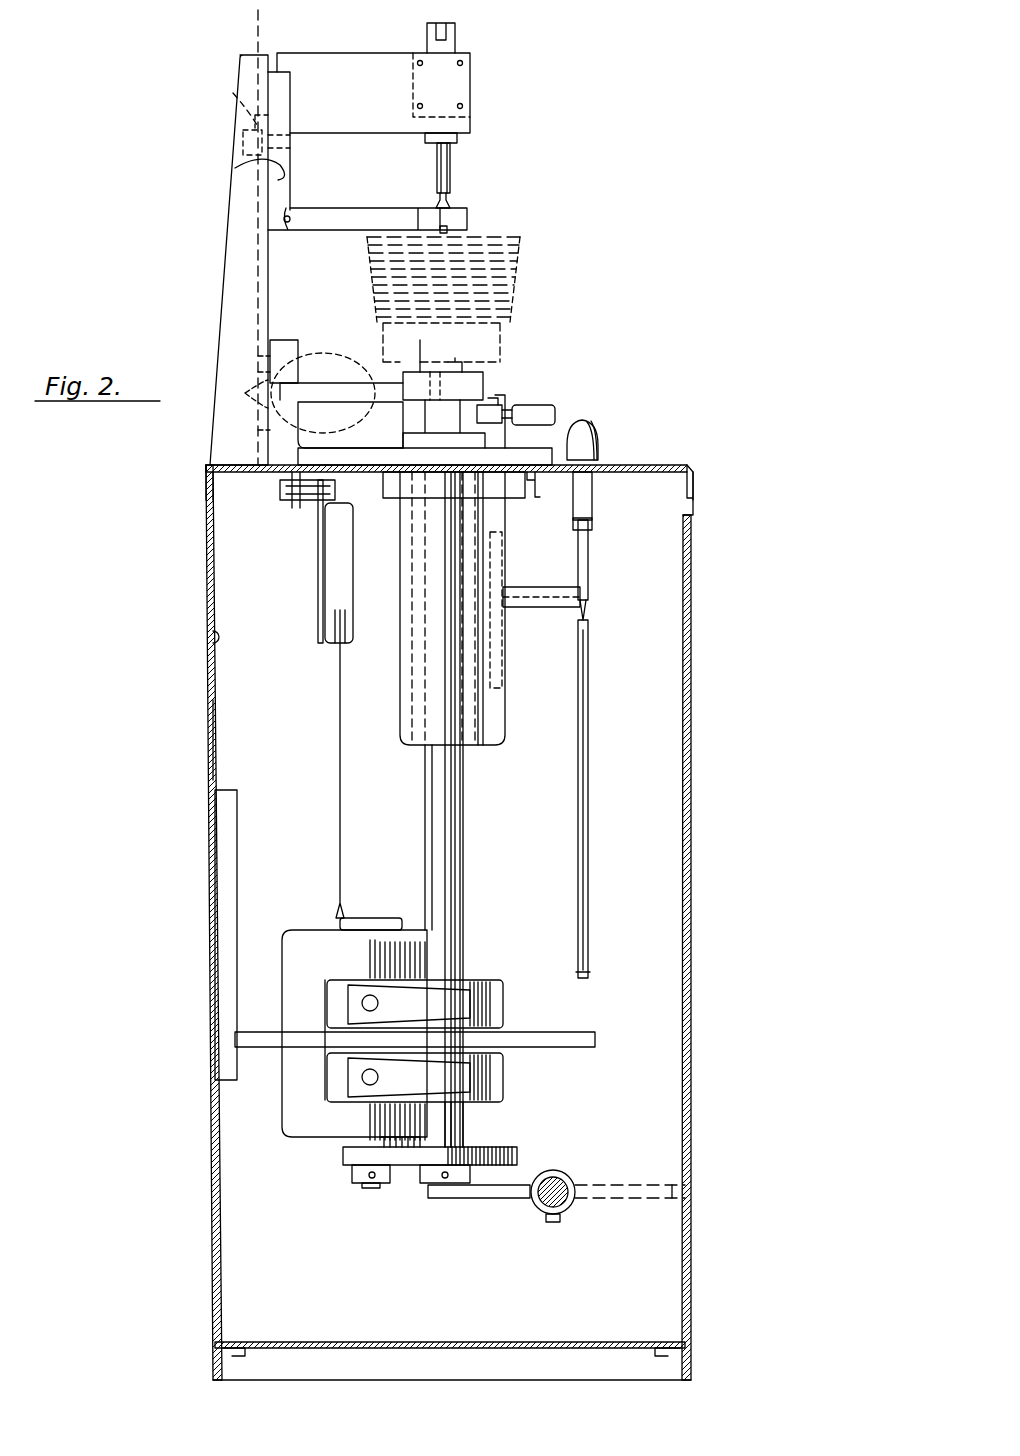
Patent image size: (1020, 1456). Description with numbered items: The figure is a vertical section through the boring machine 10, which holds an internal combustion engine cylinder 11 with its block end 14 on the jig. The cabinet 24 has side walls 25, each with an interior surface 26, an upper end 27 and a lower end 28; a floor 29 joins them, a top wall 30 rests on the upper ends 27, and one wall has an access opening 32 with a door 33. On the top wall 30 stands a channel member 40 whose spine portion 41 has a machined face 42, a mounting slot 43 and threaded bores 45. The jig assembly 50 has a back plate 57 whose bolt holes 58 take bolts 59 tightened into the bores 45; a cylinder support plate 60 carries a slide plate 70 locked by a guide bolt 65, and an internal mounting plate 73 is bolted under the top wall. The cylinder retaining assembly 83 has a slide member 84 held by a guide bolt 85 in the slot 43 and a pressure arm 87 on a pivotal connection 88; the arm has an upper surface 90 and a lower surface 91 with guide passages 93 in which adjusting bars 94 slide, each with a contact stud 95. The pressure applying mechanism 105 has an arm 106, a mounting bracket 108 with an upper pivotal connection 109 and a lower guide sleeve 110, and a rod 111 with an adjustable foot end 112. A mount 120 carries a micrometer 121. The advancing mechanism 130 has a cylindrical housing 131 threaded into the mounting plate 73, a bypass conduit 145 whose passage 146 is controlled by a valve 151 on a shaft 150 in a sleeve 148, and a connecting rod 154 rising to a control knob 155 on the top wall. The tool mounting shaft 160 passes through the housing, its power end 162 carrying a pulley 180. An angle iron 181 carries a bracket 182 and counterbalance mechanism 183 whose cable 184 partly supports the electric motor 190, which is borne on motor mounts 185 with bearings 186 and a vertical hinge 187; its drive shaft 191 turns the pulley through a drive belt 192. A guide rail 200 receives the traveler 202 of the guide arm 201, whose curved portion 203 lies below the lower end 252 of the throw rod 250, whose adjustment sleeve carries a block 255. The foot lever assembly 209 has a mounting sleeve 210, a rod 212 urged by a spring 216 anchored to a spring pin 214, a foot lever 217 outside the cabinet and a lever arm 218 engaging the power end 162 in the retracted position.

The boring machine 10 is at (516, 370).
The internal combustion engine cylinder 11 is at (530, 300).
The block end 14 is at (383, 358).
The cabinet 24 is at (198, 746).
The side walls 25 is at (210, 692).
The interior surface 26 is at (212, 633).
The upper end 27 is at (212, 485).
The lower end 28 is at (213, 1365).
The floor 29 is at (420, 1342).
The top wall 30 is at (612, 468).
The access opening 32 is at (686, 548).
The door 33 is at (692, 690).
The channel member 40 is at (215, 244).
The spine portion 41 is at (258, 45).
The machined face 42 is at (236, 168).
The vertical mounting slot 43 is at (232, 92).
The screw threaded bores 45 is at (238, 396).
The jig assembly 50 is at (506, 395).
The back plate 57 is at (300, 415).
The bolt holes 58 is at (298, 380).
The bolts 59 is at (355, 400).
The cylinder support plate 60 is at (483, 385).
The guide bolt 65 is at (448, 362).
The slide plate 70 is at (420, 358).
The internal mounting plate 73 is at (510, 490).
The cylinder retaining assembly 83 is at (492, 180).
The slide member 84 is at (290, 160).
The guide bolt 85 is at (258, 118).
The cylinder pressure arm 87 is at (350, 215).
The pivotal connection 88 is at (288, 230).
The upper surface 90 is at (436, 212).
The lower surface 91 is at (460, 246).
The longitudinal guide passage 93 is at (447, 228).
The adjusting bar 94 is at (385, 247).
The contact stud 95 is at (515, 268).
The pressure applying mechanism 105 is at (422, 66).
The arm 106 is at (355, 55).
The mounting bracket 108 is at (412, 98).
The upper pivotal connection 109 is at (455, 30).
The lower guide sleeve 110 is at (457, 140).
The rod 111 is at (440, 156).
The foot end 112 is at (392, 246).
The mount 120 is at (505, 412).
The micrometer 121 is at (550, 415).
The advancing mechanism 130 is at (392, 676).
The cylindrical housing 131 is at (402, 640).
The bypass conduit 145 is at (505, 718).
The internal passage 146 is at (490, 664).
The sleeve 148 is at (527, 590).
The shaft 150 is at (525, 605).
The valve 151 is at (485, 580).
The connecting rod 154 is at (590, 586).
The control knob 155 is at (592, 428).
The tool mounting shaft 160 is at (447, 825).
The power end 162 is at (468, 1140).
The pulley 180 is at (480, 1198).
The angle iron 181 is at (285, 500).
The bracket 182 is at (318, 557).
The counterbalance mechanism 183 is at (333, 590).
The counterbalance cable 184 is at (340, 806).
The motor mounts 185 is at (485, 1040).
The bearing 186 is at (455, 975).
The vertical hinge 187 is at (328, 985).
The electric motor 190 is at (290, 1135).
The drive shaft 191 is at (368, 1190).
The drive belt 192 is at (410, 1165).
The guide rail 200 is at (215, 950).
The guide arm 201 is at (280, 1040).
The traveler 202 is at (232, 1063).
The curved portion 203 is at (593, 1047).
The foot lever assembly 209 is at (580, 1222).
The mounting sleeve 210 is at (565, 1175).
The rod 212 is at (566, 1185).
The spring pin 214 is at (553, 1222).
The spring 216 is at (533, 1212).
The foot lever 217 is at (655, 1183).
The lever arm 218 is at (468, 1198).
The throw rod 250 is at (588, 798).
The lower end 252 is at (588, 975).
The block 255 is at (590, 525).